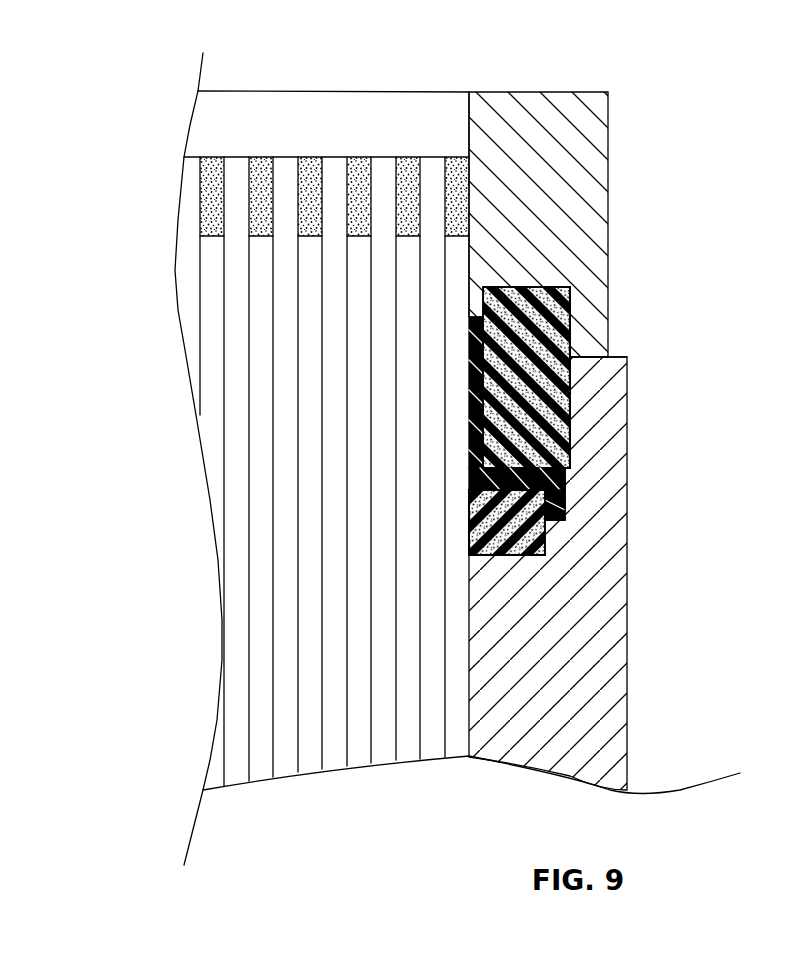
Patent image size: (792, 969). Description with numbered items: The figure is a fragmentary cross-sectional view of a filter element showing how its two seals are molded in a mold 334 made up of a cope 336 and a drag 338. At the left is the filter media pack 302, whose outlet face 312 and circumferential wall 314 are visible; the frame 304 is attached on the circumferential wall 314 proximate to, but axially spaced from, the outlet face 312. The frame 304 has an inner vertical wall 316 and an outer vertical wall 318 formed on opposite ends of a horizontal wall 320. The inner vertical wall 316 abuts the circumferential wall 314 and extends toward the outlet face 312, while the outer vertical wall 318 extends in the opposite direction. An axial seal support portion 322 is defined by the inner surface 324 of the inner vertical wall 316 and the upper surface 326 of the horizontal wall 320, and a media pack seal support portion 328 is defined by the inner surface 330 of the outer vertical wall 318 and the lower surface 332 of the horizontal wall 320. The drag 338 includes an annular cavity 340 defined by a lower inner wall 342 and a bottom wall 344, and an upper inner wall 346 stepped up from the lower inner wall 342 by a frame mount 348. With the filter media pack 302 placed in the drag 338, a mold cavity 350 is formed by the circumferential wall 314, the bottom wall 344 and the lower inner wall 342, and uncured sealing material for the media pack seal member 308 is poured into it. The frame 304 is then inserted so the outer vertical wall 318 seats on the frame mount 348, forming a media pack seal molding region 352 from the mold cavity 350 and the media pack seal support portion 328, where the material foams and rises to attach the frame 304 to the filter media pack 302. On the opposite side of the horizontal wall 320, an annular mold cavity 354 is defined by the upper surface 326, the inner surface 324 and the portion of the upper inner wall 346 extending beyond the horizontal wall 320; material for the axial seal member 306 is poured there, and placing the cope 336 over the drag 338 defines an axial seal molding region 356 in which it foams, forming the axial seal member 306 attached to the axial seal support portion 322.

The filter media pack 302 is at (178, 290).
The frame 304 is at (570, 465).
The axial seal member 306 is at (513, 287).
The media pack seal member 308 is at (530, 585).
The outlet face 312 is at (286, 157).
The circumferential wall 314 is at (469, 257).
The inner vertical wall 316 is at (572, 340).
The outer vertical wall 318 is at (553, 512).
The horizontal wall 320 is at (572, 408).
The axial seal support portion 322 is at (612, 368).
The inner surface of the inner vertical wall 324 is at (570, 300).
The upper surface of the horizontal wall 326 is at (572, 372).
The media pack seal support portion 328 is at (497, 555).
The inner surface of the outer vertical wall 330 is at (565, 485).
The lower surface of the horizontal wall 332 is at (512, 555).
The mold 334 is at (612, 700).
The cope 336 is at (590, 125).
The drag 338 is at (612, 764).
The annular cavity 340 is at (469, 542).
The lower inner wall 342 is at (553, 520).
The bottom wall 344 is at (483, 555).
The upper inner wall 346 is at (572, 440).
The frame mount 348 is at (555, 528).
The mold cavity 350 is at (469, 518).
The media pack seal molding region 352 is at (469, 502).
The annular mold cavity 354 is at (469, 418).
The axial seal molding region 356 is at (548, 287).